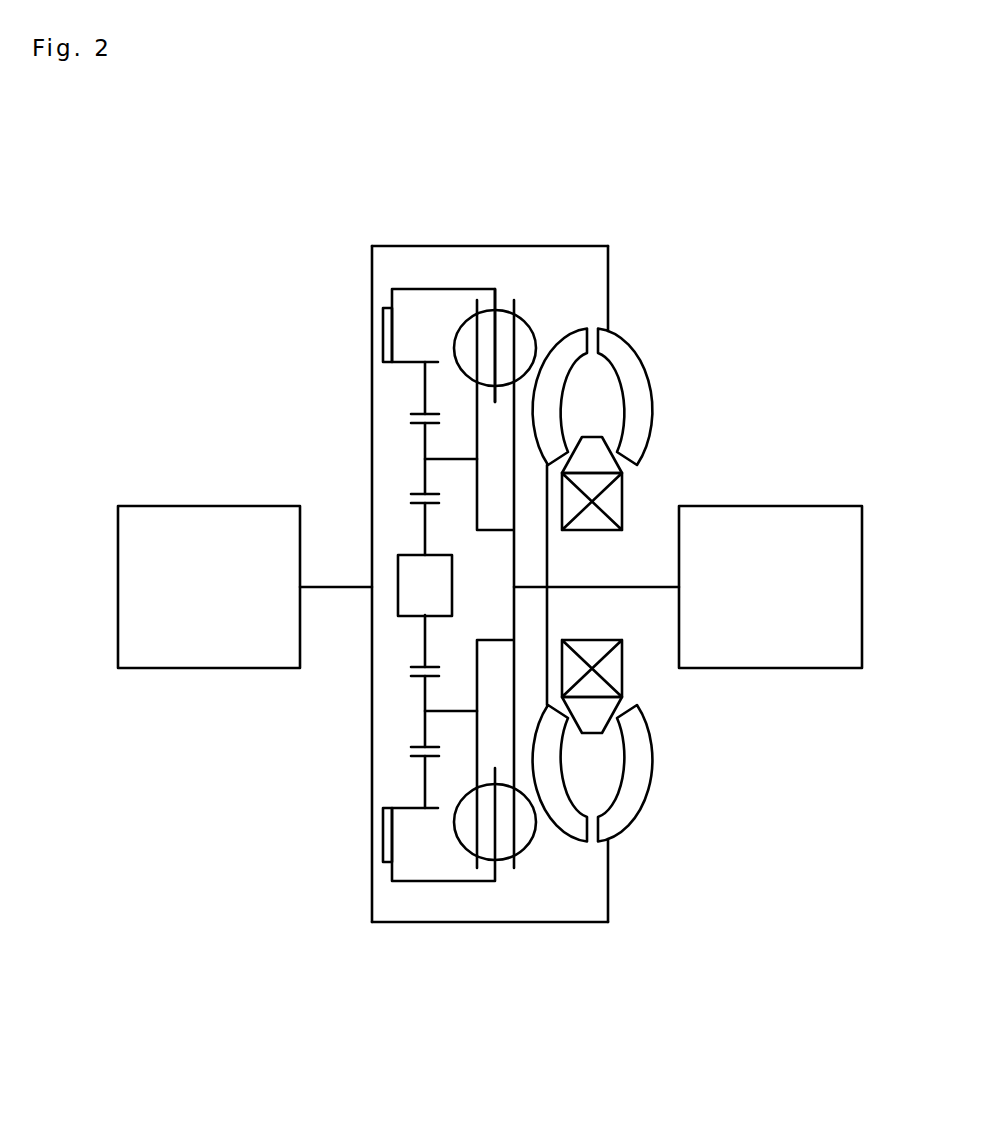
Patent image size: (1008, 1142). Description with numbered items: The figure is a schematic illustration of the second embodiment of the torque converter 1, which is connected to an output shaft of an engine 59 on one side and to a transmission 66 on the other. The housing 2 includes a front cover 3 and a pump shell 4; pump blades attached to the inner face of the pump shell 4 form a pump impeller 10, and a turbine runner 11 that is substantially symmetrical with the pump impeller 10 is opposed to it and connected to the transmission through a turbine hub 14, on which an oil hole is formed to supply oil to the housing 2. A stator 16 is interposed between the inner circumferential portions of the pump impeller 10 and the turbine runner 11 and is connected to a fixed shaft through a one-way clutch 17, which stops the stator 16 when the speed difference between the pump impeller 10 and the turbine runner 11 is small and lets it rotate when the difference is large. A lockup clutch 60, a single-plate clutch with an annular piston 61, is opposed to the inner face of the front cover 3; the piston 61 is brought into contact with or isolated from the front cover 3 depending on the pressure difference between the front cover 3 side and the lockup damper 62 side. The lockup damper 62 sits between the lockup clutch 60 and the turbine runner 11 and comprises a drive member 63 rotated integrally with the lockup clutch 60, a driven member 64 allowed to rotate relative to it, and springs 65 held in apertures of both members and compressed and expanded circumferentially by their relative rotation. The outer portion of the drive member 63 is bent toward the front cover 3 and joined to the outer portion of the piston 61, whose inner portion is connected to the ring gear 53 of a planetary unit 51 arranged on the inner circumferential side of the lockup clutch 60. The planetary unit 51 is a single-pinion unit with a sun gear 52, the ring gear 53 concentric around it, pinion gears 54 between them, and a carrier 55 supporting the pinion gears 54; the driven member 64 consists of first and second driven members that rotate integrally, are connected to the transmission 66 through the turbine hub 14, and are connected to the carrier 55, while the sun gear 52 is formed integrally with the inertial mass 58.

The torque converter 1 is at (464, 527).
The housing 2 is at (485, 553).
The front cover 3 is at (370, 272).
The pump shell 4 is at (610, 258).
The pump impeller 10 is at (628, 368).
The turbine runner 11 is at (548, 410).
The turbine hub 14 is at (548, 555).
The stator 16 is at (593, 445).
The one-way clutch 17 is at (617, 498).
The planetary unit 51 is at (448, 537).
The sun gear 52 is at (417, 504).
The ring gear 53 is at (411, 412).
The pinion gears 54 is at (417, 493).
The carrier 55 is at (455, 460).
The inertial mass 58 is at (452, 585).
The engine 59 is at (207, 670).
The lockup clutch 60 is at (378, 302).
The annular piston 61 is at (383, 332).
The lockup damper 62 is at (506, 292).
The drive member 63 is at (497, 340).
The driven member 64 is at (477, 398).
The springs 65 is at (536, 337).
The transmission 66 is at (779, 668).